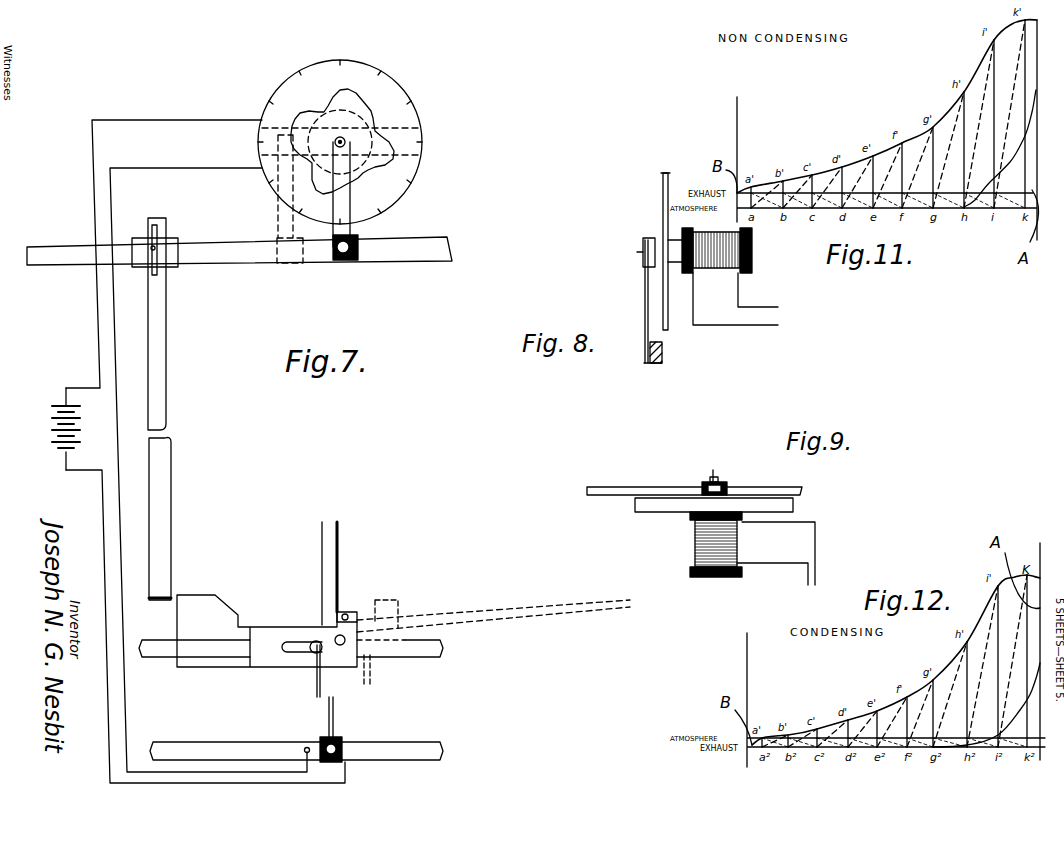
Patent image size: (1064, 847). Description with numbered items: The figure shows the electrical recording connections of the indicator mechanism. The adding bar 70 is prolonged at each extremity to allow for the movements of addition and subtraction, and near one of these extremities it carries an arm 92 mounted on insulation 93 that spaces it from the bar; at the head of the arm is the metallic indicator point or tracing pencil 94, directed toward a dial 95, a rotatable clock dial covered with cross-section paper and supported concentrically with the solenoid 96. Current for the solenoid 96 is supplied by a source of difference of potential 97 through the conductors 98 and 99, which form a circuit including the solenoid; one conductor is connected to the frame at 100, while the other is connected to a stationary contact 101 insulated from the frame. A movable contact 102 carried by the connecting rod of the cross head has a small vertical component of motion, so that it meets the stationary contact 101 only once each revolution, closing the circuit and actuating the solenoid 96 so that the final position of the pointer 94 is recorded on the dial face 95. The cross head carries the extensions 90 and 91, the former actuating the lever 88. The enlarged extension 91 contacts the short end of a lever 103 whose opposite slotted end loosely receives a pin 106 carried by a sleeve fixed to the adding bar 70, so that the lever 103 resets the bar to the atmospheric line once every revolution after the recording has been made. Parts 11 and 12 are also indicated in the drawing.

In FIG. 7, the dial 95 is at (287, 90).
In FIG. 8, the dial 95 is at (660, 185).
In FIG. 9, the dial 95 is at (737, 505).
In FIG. 7, the indicator point 94 is at (350, 138).
In FIG. 8, the indicator point 94 is at (636, 255).
In FIG. 9, the indicator point 94 is at (716, 478).
In FIG. 7, the arm 92 is at (345, 200).
In FIG. 8, the arm 92 is at (622, 301).
In FIG. 9, the arm 92 is at (710, 477).
In FIG. 7, the insulation 93 is at (348, 262).
In FIG. 8, the insulation 93 is at (665, 345).
In FIG. 9, the insulation 93 is at (727, 485).
In FIG. 7, the pin 106 is at (158, 254).
In FIG. 7, the conductor 99 is at (163, 398).
In FIG. 7, the lever 103 is at (170, 456).
In FIG. 7, the source of difference of potential 97 is at (52, 425).
In FIG. 7, the conductor 98 is at (100, 500).
In FIG. 7, the extension 91 is at (212, 617).
In FIG. 7, the valve rod 11 is at (258, 640).
In FIG. 7, the lever 88 is at (322, 530).
In FIG. 7, the contact in alternate position 12 is at (493, 621).
In FIG. 7, the extension 90 is at (357, 612).
In FIG. 7, the movable contact 102 is at (318, 680).
In FIG. 7, the frame connection 100 is at (306, 748).
In FIG. 7, the stationary contact 101 is at (340, 737).
In FIG. 8, the solenoid 96 is at (720, 273).
In FIG. 9, the solenoid 96 is at (752, 548).
In FIG. 8, the adding bar 70 is at (654, 366).
In FIG. 9, the adding bar 70 is at (622, 487).